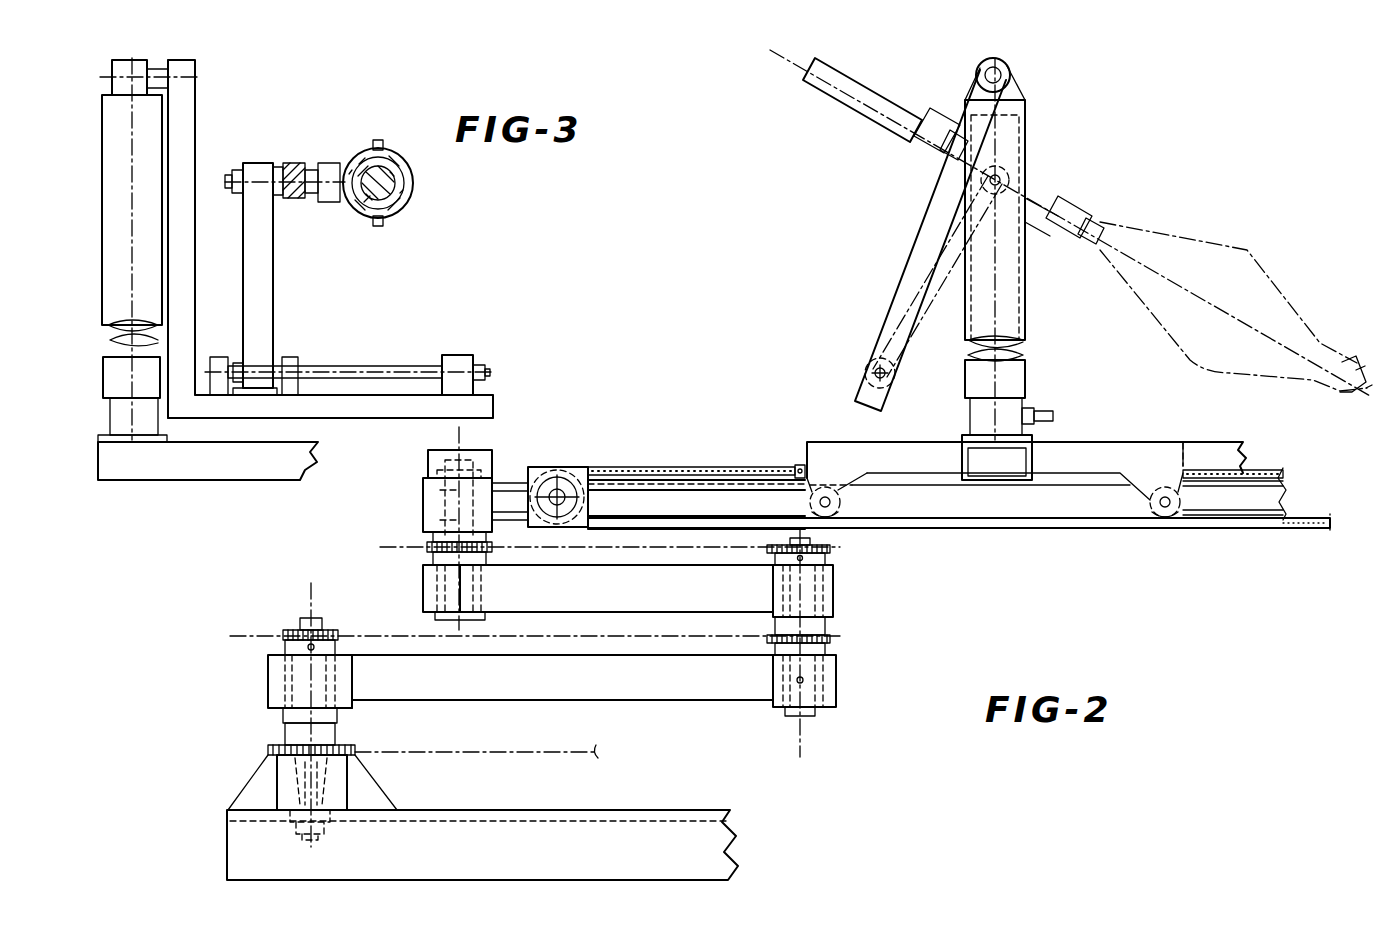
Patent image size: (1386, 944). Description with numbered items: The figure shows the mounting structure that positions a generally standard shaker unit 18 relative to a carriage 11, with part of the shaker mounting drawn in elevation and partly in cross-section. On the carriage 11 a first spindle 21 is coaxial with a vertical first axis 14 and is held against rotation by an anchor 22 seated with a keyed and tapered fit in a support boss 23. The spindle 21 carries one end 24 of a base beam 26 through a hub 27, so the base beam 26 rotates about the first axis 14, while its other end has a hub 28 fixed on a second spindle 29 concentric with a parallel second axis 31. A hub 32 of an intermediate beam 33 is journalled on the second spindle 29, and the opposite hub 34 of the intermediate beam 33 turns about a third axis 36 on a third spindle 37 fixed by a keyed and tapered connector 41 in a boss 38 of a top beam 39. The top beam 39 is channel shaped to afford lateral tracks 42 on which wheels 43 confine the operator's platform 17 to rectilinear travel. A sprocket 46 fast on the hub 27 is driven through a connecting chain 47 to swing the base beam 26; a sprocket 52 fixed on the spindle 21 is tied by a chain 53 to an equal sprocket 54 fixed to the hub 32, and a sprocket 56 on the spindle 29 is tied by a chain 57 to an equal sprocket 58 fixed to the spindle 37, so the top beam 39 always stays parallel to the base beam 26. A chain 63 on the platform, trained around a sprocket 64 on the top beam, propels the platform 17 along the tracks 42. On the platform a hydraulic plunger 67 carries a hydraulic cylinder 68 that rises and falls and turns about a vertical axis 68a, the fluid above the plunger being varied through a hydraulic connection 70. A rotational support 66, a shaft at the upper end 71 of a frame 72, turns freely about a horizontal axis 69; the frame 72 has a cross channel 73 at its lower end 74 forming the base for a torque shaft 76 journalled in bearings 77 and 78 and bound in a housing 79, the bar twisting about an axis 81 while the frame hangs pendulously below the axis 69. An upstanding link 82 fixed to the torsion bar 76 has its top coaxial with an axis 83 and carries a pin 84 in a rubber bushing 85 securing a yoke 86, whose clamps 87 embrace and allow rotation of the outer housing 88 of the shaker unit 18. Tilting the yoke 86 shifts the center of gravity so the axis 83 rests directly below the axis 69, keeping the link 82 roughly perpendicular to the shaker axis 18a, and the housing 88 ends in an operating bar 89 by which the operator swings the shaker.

In FIG. 2, the carriage 11 is at (680, 808).
In FIG. 2, the first axis 14 is at (312, 600).
In FIG. 2, the operator's platform 17 is at (1135, 439).
In FIG. 3, the shaker unit 18 is at (366, 148).
In FIG. 2, the shaker unit 18 is at (898, 95).
In FIG. 2, the shaker axis 18a is at (790, 58).
In FIG. 2, the first spindle 21 is at (326, 730).
In FIG. 2, the anchor 22 is at (350, 790).
In FIG. 2, the support boss 23 is at (342, 812).
In FIG. 2, the base beam end 24 is at (268, 668).
In FIG. 2, the base beam 26 is at (552, 688).
In FIG. 2, the hub 27 is at (284, 722).
In FIG. 2, the hub 28 is at (838, 680).
In FIG. 2, the second spindle 29 is at (820, 712).
In FIG. 2, the second axis 31 is at (800, 745).
In FIG. 2, the hub 32 is at (836, 596).
In FIG. 2, the intermediate beam 33 is at (704, 594).
In FIG. 2, the hub 34 is at (423, 577).
In FIG. 2, the third axis 36 is at (452, 437).
In FIG. 2, the third spindle 37 is at (437, 592).
In FIG. 2, the boss 38 is at (423, 518).
In FIG. 2, the top beam 39 is at (513, 483).
In FIG. 2, the keyed and tapered connector 41 is at (440, 498).
In FIG. 2, the lateral tracks 42 is at (1222, 520).
In FIG. 2, the wheels 43 is at (840, 514).
In FIG. 2, the sprocket 46 is at (268, 752).
In FIG. 2, the connecting chain 47 is at (476, 753).
In FIG. 2, the sprocket 52 is at (280, 636).
In FIG. 2, the chain 53 is at (574, 638).
In FIG. 2, the sprocket 54 is at (834, 639).
In FIG. 2, the sprocket 56 is at (832, 549).
In FIG. 2, the chain 57 is at (616, 553).
In FIG. 2, the sprocket 58 is at (427, 547).
In FIG. 2, the chain 63 is at (755, 448).
In FIG. 2, the sprocket 64 is at (580, 468).
In FIG. 3, the rotational support 66 is at (157, 69).
In FIG. 2, the rotational support 66 is at (1008, 76).
In FIG. 3, the hydraulic plunger 67 is at (112, 413).
In FIG. 2, the hydraulic plunger 67 is at (968, 412).
In FIG. 3, the hydraulic cylinder 68 is at (103, 185).
In FIG. 2, the hydraulic cylinder 68 is at (1026, 316).
In FIG. 3, the vertical axis 68a is at (130, 250).
In FIG. 2, the vertical axis 68a is at (997, 292).
In FIG. 3, the horizontal axis 69 is at (110, 78).
In FIG. 2, the horizontal axis 69 is at (983, 74).
In FIG. 2, the hydraulic connection 70 is at (1040, 412).
In FIG. 3, the upper end 71 is at (196, 66).
In FIG. 3, the frame 72 is at (195, 142).
In FIG. 2, the frame 72 is at (912, 241).
In FIG. 3, the cross channel 73 is at (356, 413).
In FIG. 2, the cross channel 73 is at (862, 400).
In FIG. 3, the lower end 74 is at (181, 405).
In FIG. 3, the torque shaft 76 is at (364, 368).
In FIG. 2, the torque shaft 76 is at (868, 374).
In FIG. 3, the bearing 77 is at (222, 357).
In FIG. 2, the bearing 77 is at (868, 350).
In FIG. 3, the bearing 78 is at (292, 357).
In FIG. 3, the housing 79 is at (474, 360).
In FIG. 3, the axis 81 is at (412, 368).
In FIG. 3, the upstanding link 82 is at (274, 277).
In FIG. 2, the upstanding link 82 is at (947, 287).
In FIG. 3, the axis 83 is at (262, 186).
In FIG. 3, the pin 84 is at (295, 163).
In FIG. 3, the rubber bushing 85 is at (312, 167).
In FIG. 3, the yoke 86 is at (326, 200).
In FIG. 3, the clamps 87 is at (406, 162).
In FIG. 2, the clamps 87 is at (915, 162).
In FIG. 2, the outer housing 88 is at (1180, 232).
In FIG. 2, the operating bar 89 is at (1362, 396).